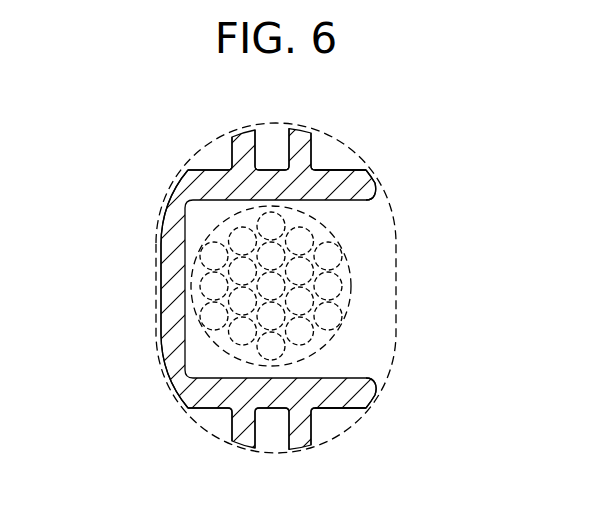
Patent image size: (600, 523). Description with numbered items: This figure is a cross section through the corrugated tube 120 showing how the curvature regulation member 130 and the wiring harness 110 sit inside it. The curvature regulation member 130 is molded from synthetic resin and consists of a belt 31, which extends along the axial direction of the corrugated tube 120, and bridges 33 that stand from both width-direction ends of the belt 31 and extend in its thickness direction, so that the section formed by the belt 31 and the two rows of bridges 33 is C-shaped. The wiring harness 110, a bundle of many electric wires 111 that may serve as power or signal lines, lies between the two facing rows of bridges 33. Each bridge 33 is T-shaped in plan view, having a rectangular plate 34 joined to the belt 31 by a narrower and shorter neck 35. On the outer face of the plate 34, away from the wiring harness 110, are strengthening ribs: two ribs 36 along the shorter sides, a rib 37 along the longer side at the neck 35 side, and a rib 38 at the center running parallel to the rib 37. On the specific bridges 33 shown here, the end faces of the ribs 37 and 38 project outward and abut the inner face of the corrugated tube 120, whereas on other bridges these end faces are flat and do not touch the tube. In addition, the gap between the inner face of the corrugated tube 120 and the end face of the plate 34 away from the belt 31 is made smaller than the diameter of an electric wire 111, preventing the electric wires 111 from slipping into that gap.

The belt 31 is at (168, 268).
The bridge 33 is at (347, 201).
The plate 34 is at (344, 177).
The neck 35 is at (190, 177).
The rib 36 is at (272, 150).
The rib 37 is at (238, 153).
The rib 38 is at (312, 150).
The wiring harness 110 is at (348, 265).
The electric wire 111 is at (320, 233).
The corrugated tube 120 is at (395, 301).
The curvature regulation member 130 is at (162, 240).